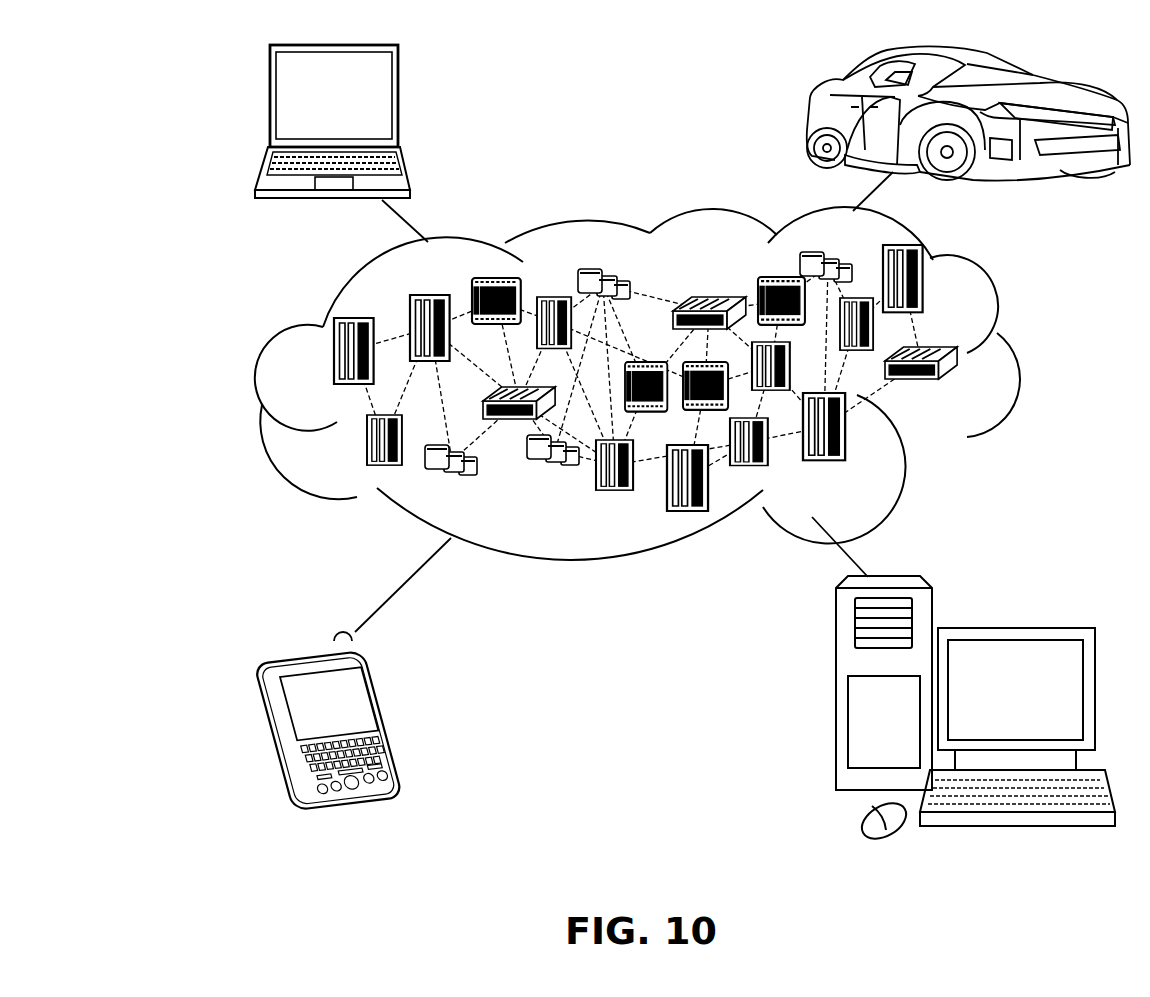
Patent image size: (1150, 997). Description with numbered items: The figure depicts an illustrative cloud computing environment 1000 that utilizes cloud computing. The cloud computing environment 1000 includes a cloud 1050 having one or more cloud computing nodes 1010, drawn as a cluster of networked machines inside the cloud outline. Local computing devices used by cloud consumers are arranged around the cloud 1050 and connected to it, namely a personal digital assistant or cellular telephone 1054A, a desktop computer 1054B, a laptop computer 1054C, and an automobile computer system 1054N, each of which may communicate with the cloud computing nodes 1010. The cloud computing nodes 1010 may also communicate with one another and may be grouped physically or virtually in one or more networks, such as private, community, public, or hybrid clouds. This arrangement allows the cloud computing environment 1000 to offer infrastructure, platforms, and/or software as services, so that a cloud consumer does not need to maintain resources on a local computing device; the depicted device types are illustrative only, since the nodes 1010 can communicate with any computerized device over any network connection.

The cloud computing environment 1000 is at (112, 72).
The cloud 1050 is at (1013, 357).
The cloud computing nodes 1010 is at (972, 391).
The personal digital assistant (PDA) or cellular telephone 1054A is at (390, 720).
The desktop computer 1054B is at (1010, 626).
The laptop computer 1054C is at (397, 103).
The automobile computer system 1054N is at (809, 120).